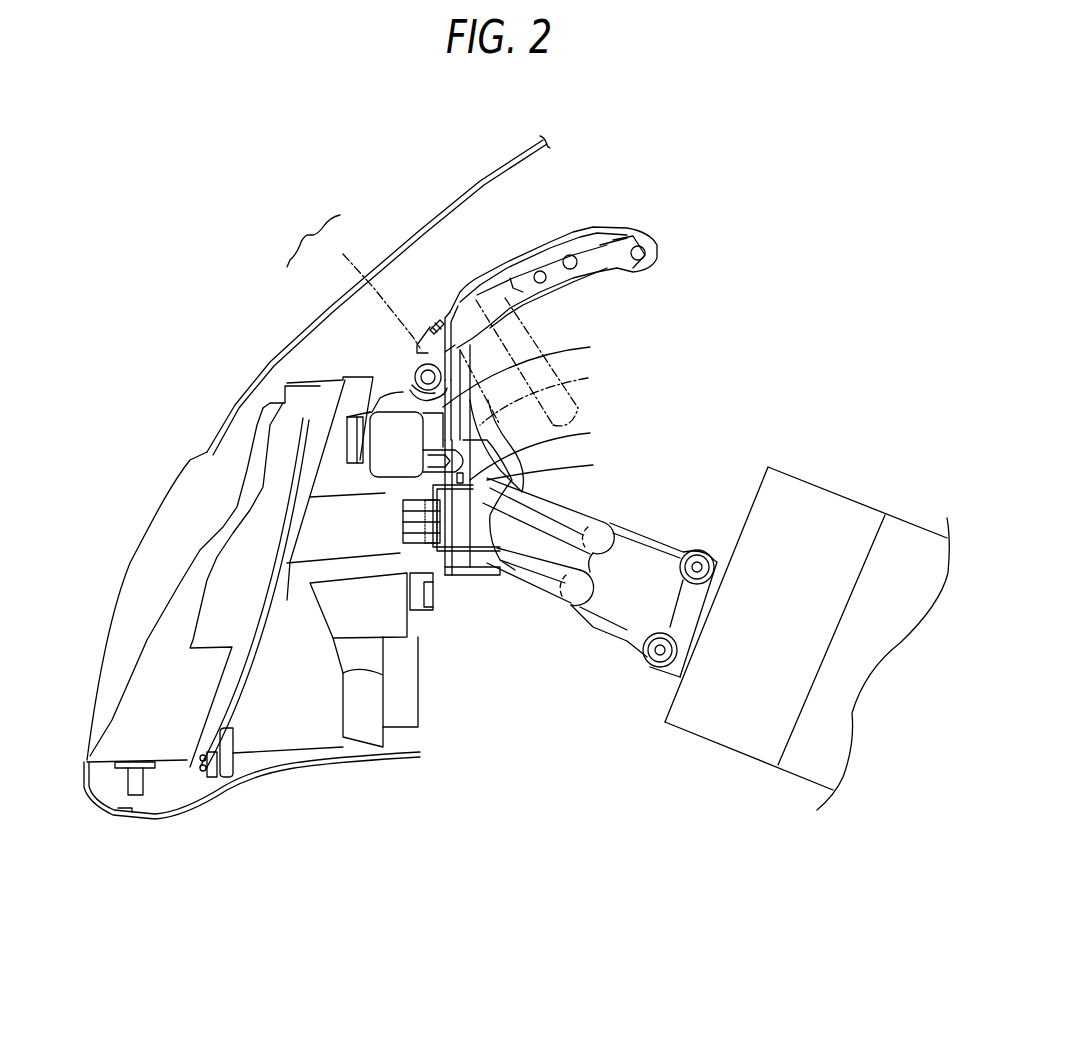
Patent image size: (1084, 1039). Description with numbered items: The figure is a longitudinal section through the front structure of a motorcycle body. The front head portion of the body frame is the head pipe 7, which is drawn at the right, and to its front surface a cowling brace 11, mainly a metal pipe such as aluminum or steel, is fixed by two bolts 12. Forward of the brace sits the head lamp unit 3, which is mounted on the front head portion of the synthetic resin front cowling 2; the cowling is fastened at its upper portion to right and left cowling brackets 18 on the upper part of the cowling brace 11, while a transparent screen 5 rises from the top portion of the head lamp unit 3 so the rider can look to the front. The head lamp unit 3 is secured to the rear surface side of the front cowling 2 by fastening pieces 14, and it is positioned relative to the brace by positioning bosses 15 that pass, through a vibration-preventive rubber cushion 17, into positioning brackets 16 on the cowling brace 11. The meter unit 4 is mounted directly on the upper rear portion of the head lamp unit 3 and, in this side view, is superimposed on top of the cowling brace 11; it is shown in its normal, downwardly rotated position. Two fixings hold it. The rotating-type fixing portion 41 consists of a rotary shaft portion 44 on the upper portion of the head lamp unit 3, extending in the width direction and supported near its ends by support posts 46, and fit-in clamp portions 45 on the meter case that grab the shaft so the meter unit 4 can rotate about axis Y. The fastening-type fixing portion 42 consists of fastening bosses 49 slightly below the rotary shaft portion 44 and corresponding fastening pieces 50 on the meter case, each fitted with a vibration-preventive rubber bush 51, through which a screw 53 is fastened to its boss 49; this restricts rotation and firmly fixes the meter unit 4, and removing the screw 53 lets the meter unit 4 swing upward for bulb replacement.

The front cowling 2 is at (96, 783).
The head lamp unit 3 is at (132, 556).
The meter unit 4 is at (442, 314).
The transparent screen 5 is at (260, 378).
The head pipe 7 is at (758, 488).
The cowling brace 11 is at (524, 258).
The bolts 12 is at (660, 647).
The fastening pieces 14 is at (323, 452).
The positioning bosses 15 is at (372, 537).
The positioning brackets 16 is at (492, 567).
The rubber cushion 17 is at (448, 570).
The cowling brackets 18 is at (600, 245).
The rotating-type fixing portion 41 is at (313, 235).
The fastening-type fixing portion 42 is at (624, 338).
The rotary shaft portion 44 is at (393, 367).
The fit-in clamp portions 45 is at (374, 286).
The support posts 46 is at (387, 392).
The fastening bosses 49 is at (529, 371).
The fastening pieces 50 is at (548, 396).
The vibration-preventive rubber bush 51 is at (495, 446).
The screw 53 is at (520, 451).